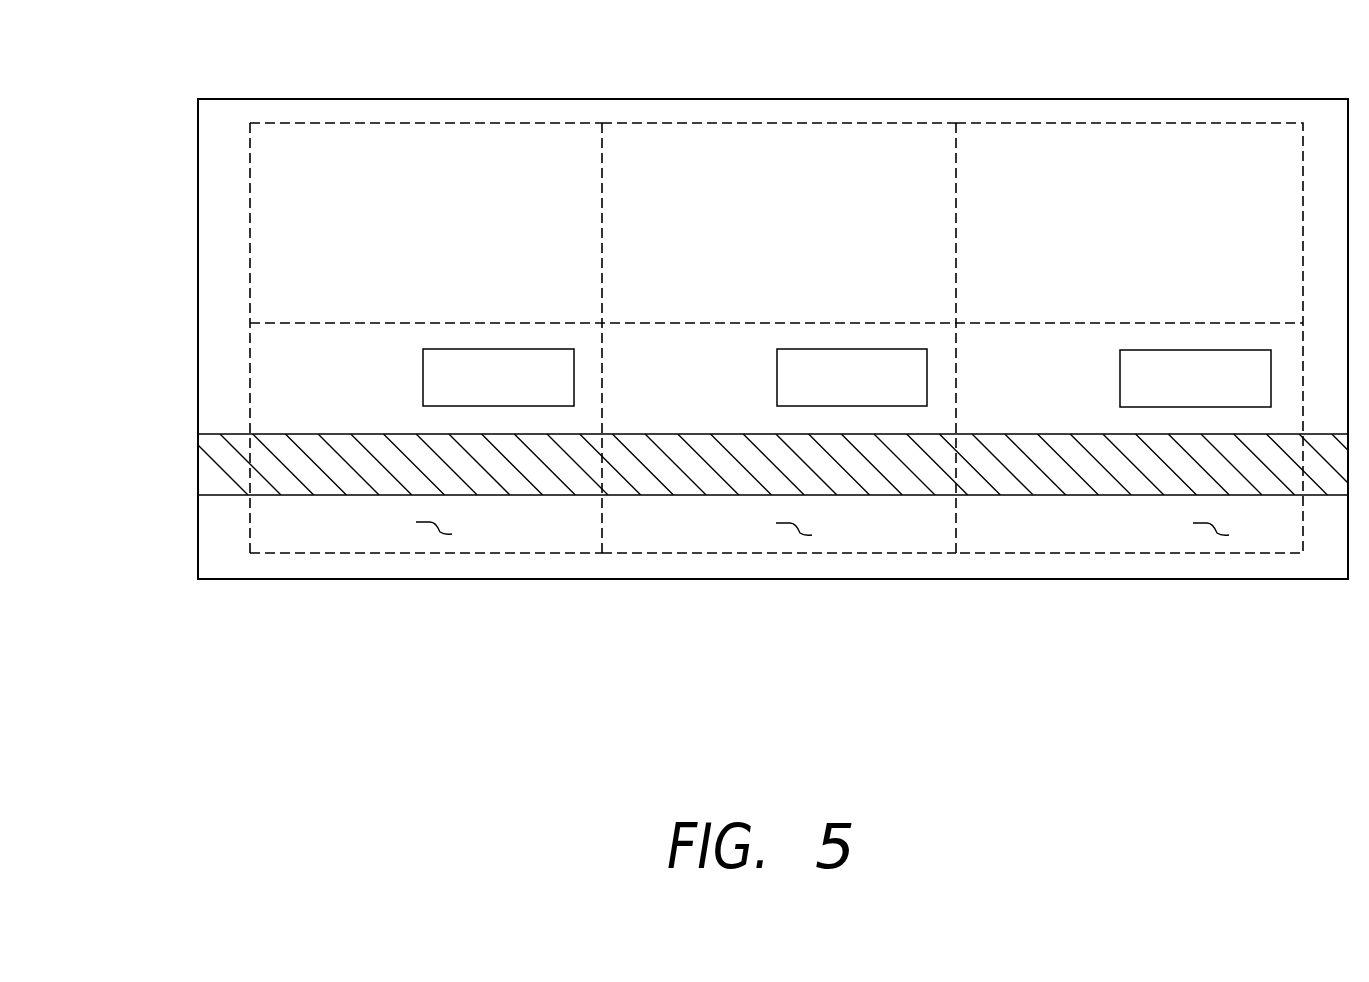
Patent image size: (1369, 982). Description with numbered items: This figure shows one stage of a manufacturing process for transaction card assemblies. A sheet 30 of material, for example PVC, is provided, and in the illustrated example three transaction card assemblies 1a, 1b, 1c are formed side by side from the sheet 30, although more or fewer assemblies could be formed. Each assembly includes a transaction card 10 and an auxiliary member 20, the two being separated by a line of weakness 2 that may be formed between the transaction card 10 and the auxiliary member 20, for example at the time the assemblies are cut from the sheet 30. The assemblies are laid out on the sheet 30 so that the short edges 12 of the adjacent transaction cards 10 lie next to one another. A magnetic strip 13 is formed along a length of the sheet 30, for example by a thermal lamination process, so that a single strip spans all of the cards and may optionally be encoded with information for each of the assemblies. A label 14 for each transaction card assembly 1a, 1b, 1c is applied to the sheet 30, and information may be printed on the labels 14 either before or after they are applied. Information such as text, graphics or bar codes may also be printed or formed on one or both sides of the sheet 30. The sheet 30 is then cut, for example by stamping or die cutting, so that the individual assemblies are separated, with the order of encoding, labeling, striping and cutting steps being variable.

The transaction card assembly 1a is at (349, 122).
The transaction card assembly 1b is at (706, 123).
The transaction card assembly 1c is at (1067, 123).
The line of weakness 2 is at (277, 322).
The transaction card 10 is at (424, 531).
The short edge 12 is at (249, 418).
The magnetic strip 13 is at (198, 466).
The label 14 is at (423, 378).
The auxiliary member 20 is at (547, 157).
The sheet 30 is at (198, 579).